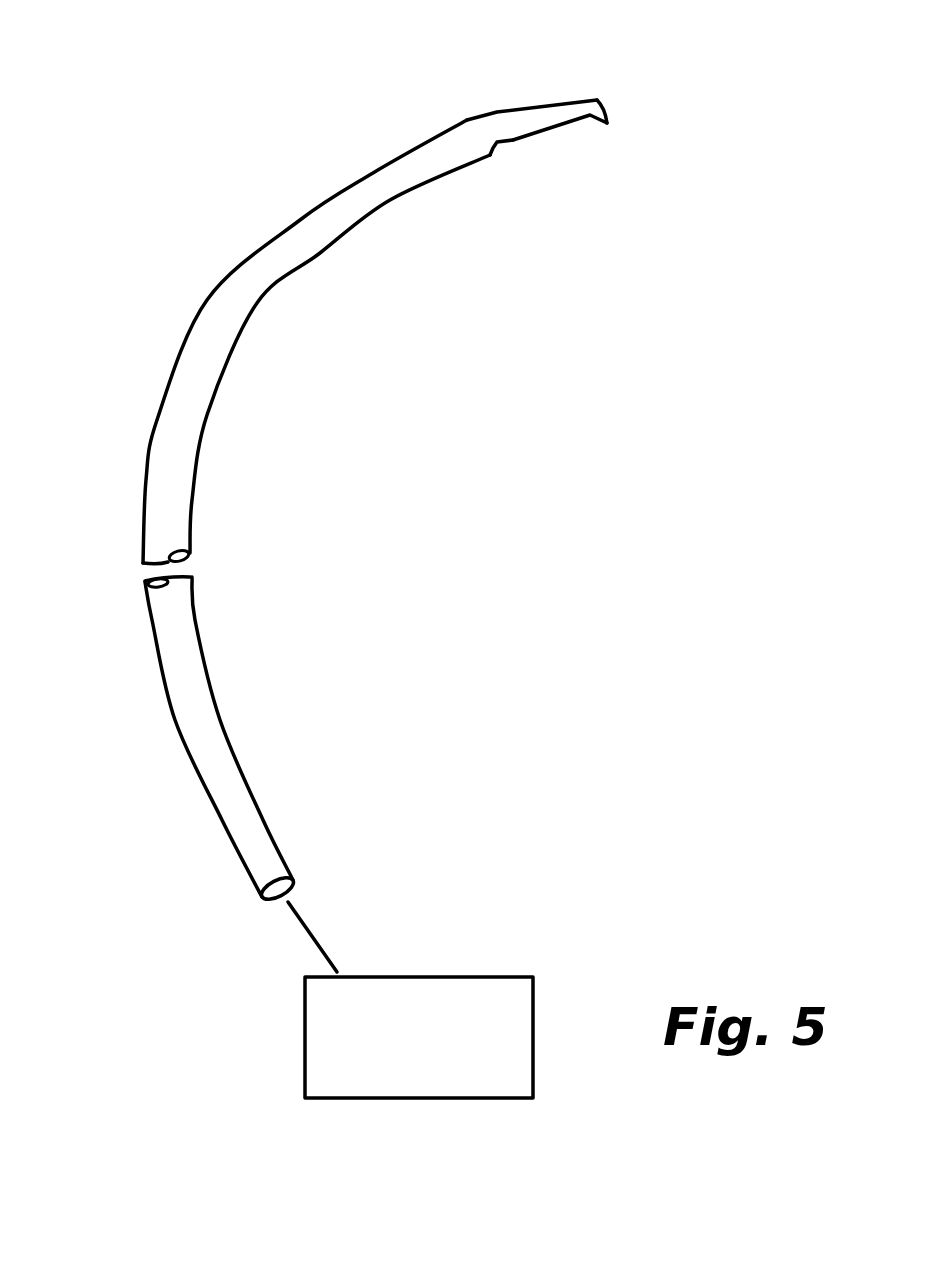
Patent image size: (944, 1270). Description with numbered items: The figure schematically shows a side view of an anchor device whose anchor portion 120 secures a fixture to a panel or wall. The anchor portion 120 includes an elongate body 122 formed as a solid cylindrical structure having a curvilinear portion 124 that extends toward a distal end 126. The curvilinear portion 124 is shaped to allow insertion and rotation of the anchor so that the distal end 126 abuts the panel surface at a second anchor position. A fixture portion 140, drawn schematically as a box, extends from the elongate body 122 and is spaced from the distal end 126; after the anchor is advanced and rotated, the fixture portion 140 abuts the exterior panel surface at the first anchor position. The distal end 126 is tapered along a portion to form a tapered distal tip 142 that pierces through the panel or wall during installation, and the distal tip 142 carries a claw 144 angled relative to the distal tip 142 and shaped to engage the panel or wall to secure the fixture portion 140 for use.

The anchor portion 120 is at (165, 326).
The elongate body 122 is at (135, 508).
The curvilinear portion 124 is at (190, 607).
The distal end 126 is at (601, 71).
The fixture portion 140 is at (416, 971).
The tapered distal tip 142 is at (513, 140).
The claw 144 is at (608, 121).